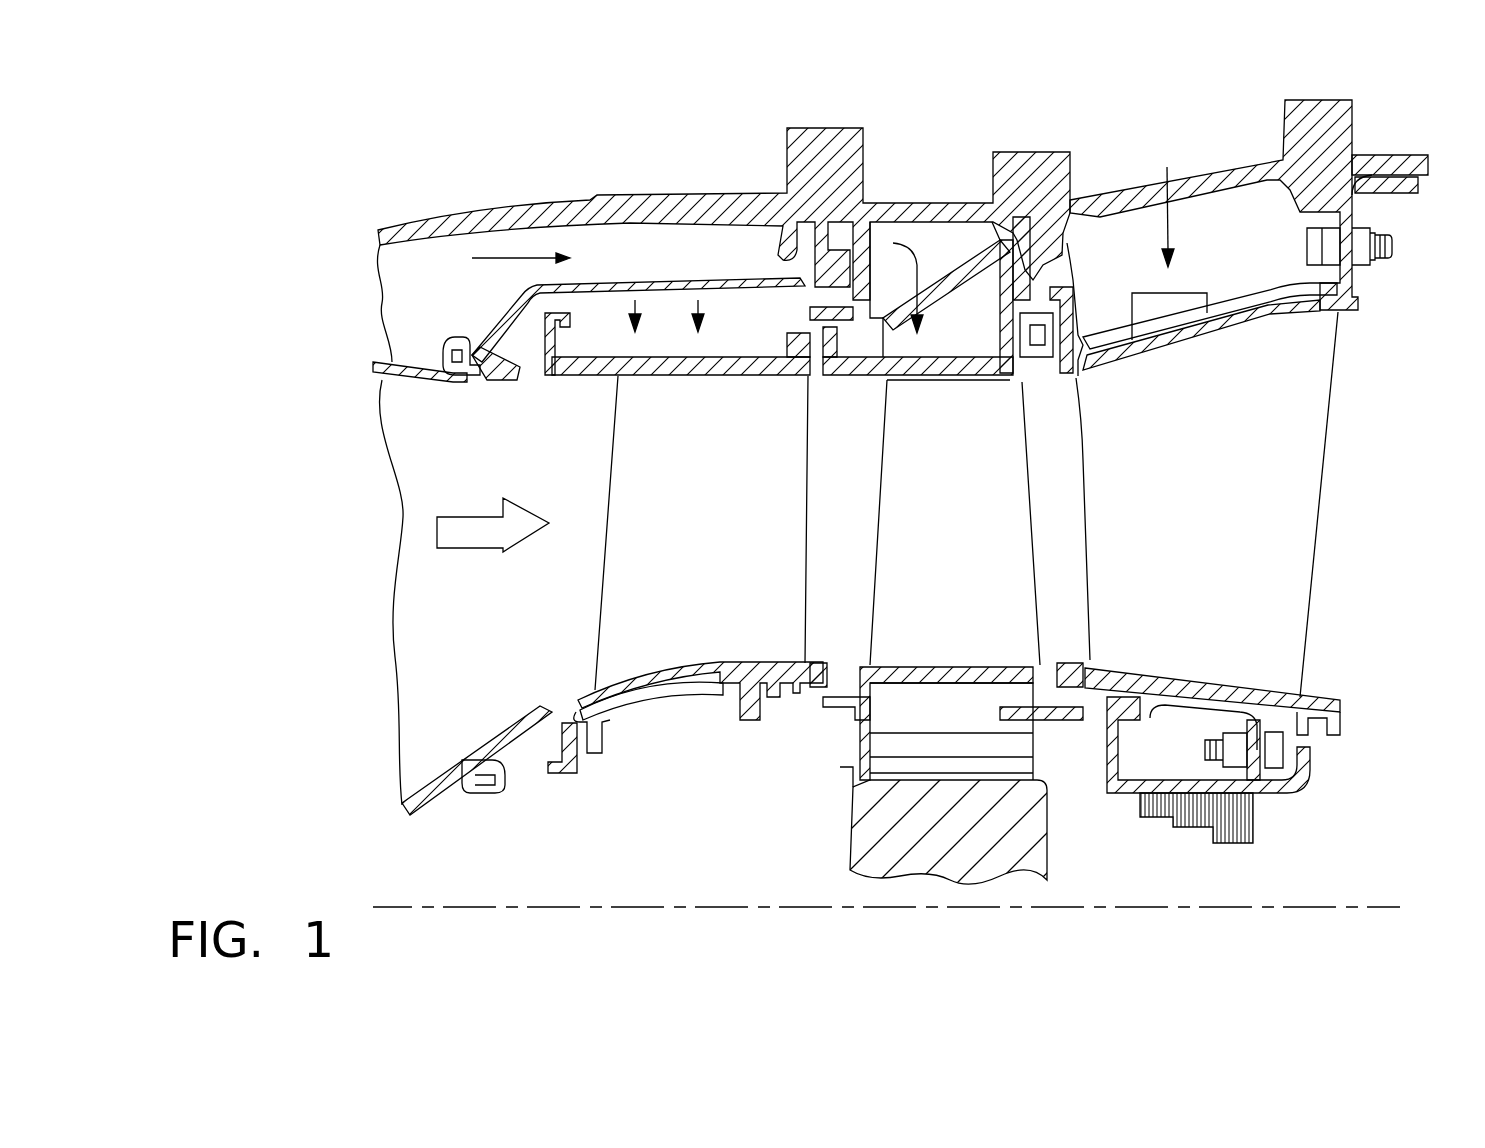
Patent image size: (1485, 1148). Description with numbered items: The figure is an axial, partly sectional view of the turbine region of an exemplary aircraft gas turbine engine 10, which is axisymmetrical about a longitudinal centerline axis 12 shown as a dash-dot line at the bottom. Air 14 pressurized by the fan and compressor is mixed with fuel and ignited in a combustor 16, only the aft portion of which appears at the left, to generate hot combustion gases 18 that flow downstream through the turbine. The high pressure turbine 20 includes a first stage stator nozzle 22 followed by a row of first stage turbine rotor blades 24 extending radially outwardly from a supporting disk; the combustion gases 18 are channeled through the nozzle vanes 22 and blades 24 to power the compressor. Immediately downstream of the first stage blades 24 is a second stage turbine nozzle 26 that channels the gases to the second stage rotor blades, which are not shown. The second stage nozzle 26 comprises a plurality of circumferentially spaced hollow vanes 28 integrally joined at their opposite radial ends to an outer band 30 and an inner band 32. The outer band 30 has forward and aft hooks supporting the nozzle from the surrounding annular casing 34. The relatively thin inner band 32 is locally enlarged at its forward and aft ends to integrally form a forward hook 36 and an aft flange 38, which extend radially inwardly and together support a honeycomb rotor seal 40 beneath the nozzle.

The gas turbine engine 10 is at (528, 170).
The centerline axis 12 is at (637, 908).
The air 14 is at (493, 260).
The combustor 16 is at (420, 807).
The combustion gases 18 is at (467, 548).
The high pressure turbine 20 is at (760, 749).
The first stage stator nozzle 22 is at (697, 515).
The first stage turbine rotor blades 24 is at (925, 531).
The second stage turbine nozzle 26 is at (1378, 331).
The hollow vanes 28 is at (1198, 523).
The outer band 30 is at (1267, 287).
The inner band 32 is at (1272, 690).
The annular casing 34 is at (1113, 197).
The forward hook 36 is at (1165, 715).
The aft flange 38 is at (1277, 727).
The honeycomb rotor seal 40 is at (1253, 817).